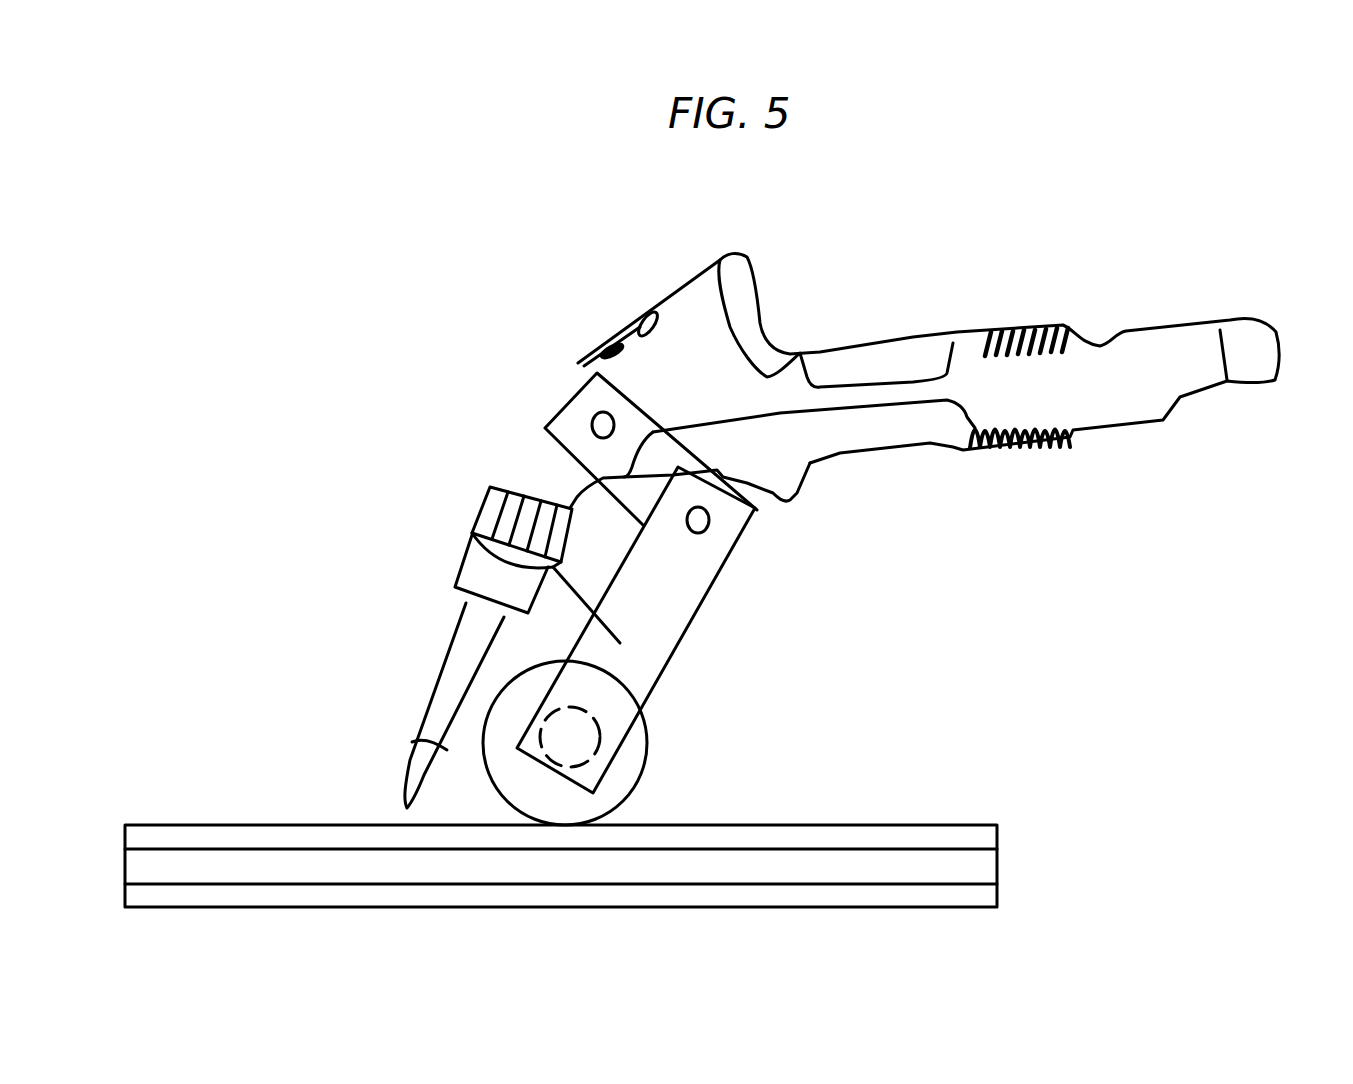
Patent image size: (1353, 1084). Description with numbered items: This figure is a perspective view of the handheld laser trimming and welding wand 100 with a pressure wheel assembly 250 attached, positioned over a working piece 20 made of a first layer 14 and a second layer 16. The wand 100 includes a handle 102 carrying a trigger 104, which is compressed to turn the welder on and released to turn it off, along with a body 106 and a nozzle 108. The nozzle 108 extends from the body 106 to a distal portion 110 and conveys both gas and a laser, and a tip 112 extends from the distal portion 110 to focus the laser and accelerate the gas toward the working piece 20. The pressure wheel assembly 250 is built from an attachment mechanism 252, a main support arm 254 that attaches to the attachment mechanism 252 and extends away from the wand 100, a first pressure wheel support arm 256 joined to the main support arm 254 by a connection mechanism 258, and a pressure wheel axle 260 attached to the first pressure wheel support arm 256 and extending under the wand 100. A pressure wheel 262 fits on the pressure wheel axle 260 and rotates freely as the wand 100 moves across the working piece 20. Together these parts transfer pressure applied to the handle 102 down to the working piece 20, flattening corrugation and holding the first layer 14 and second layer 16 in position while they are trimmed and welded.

The handheld laser trimming and welding wand 100 is at (1070, 238).
The handle 102 is at (1070, 390).
The trigger 104 is at (797, 490).
The body 106 is at (698, 358).
The nozzle 108 is at (466, 603).
The distal portion 110 is at (430, 732).
The tip 112 is at (410, 785).
The pressure wheel assembly 250 is at (485, 505).
The attachment mechanism 252 is at (593, 425).
The main support arm 254 is at (610, 405).
The first pressure wheel support arm 256 is at (692, 577).
The connection mechanism 258 is at (707, 522).
The pressure wheel axle 260 is at (573, 733).
The pressure wheel 262 is at (645, 727).
The working piece 20 is at (912, 838).
The first layer 14 is at (997, 825).
The second layer 16 is at (992, 872).